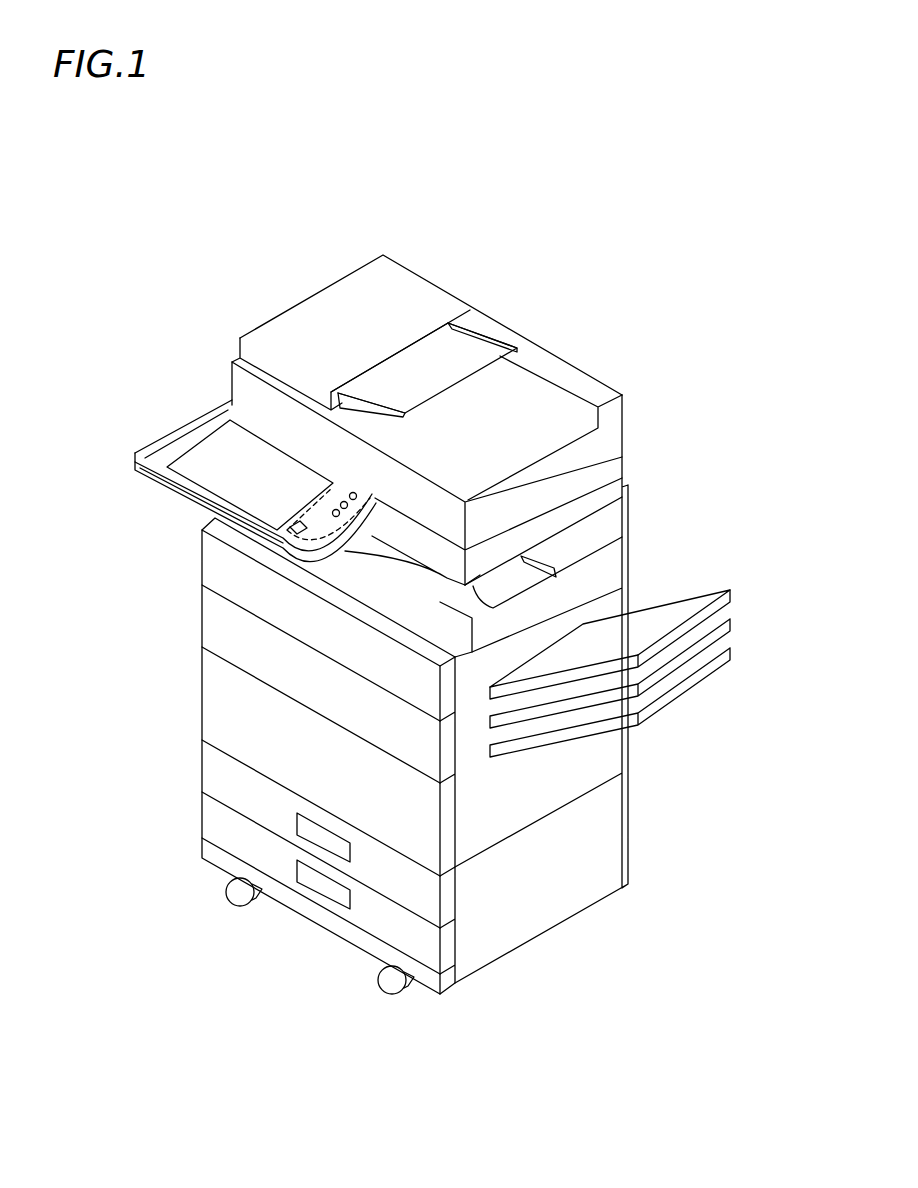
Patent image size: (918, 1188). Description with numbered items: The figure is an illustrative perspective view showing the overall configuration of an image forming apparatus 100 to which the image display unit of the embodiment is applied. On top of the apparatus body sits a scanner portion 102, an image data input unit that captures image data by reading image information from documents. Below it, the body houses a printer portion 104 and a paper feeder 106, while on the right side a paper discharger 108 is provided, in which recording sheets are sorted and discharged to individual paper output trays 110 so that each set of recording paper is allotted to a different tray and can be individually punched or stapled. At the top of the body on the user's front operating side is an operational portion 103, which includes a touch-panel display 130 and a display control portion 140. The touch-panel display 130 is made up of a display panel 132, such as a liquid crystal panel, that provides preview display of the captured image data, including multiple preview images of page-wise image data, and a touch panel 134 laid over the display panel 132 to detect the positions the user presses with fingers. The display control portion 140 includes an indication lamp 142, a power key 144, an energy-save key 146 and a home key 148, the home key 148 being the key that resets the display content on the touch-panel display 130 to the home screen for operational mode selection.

The image forming apparatus 100 is at (609, 284).
The scanner portion 102 is at (633, 428).
The operational portion 103 is at (213, 516).
The printer portion 104 is at (195, 668).
The paper feeder 106 is at (195, 796).
The paper discharger 108 is at (639, 641).
The paper output tray 110 is at (722, 578).
The touch-panel display 130 is at (234, 467).
The display panel 132 is at (250, 475).
The touch panel 134 is at (217, 460).
The display control portion 140 is at (336, 486).
The indication lamp 142 is at (357, 496).
The power key 144 is at (348, 505).
The energy-save key 146 is at (337, 517).
The home key 148 is at (296, 536).